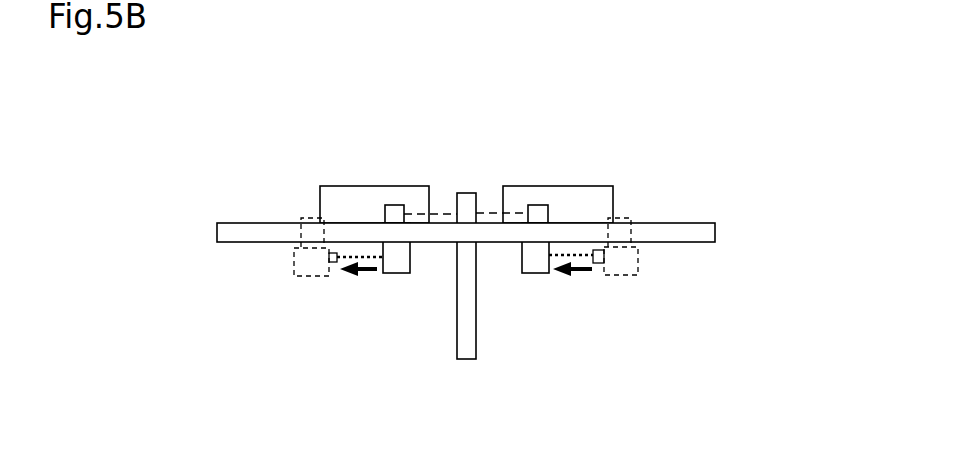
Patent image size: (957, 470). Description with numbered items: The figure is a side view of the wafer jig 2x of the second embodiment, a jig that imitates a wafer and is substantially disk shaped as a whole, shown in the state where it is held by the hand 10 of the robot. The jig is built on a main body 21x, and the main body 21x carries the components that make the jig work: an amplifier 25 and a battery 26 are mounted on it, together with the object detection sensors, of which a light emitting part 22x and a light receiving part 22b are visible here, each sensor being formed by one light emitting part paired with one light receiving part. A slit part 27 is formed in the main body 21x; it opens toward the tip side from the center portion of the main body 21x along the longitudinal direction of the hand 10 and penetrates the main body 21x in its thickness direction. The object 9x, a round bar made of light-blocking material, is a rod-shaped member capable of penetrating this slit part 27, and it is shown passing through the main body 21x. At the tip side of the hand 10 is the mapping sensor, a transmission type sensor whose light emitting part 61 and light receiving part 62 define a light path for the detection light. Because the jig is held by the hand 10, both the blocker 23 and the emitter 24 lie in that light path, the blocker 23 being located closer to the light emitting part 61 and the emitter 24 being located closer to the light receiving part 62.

The wafer jig 2x is at (245, 198).
The object 9x is at (466, 351).
The hand 10 is at (294, 260).
The main body 21x is at (710, 230).
The light receiving part 22b is at (400, 205).
The light emitting part 22x is at (535, 205).
The blocker 23 is at (533, 272).
The emitter 24 is at (395, 272).
The amplifier 25 is at (577, 192).
The battery 26 is at (358, 192).
The slit part 27 is at (520, 228).
The light emitting part 61 is at (598, 263).
The light receiving part 62 is at (333, 263).